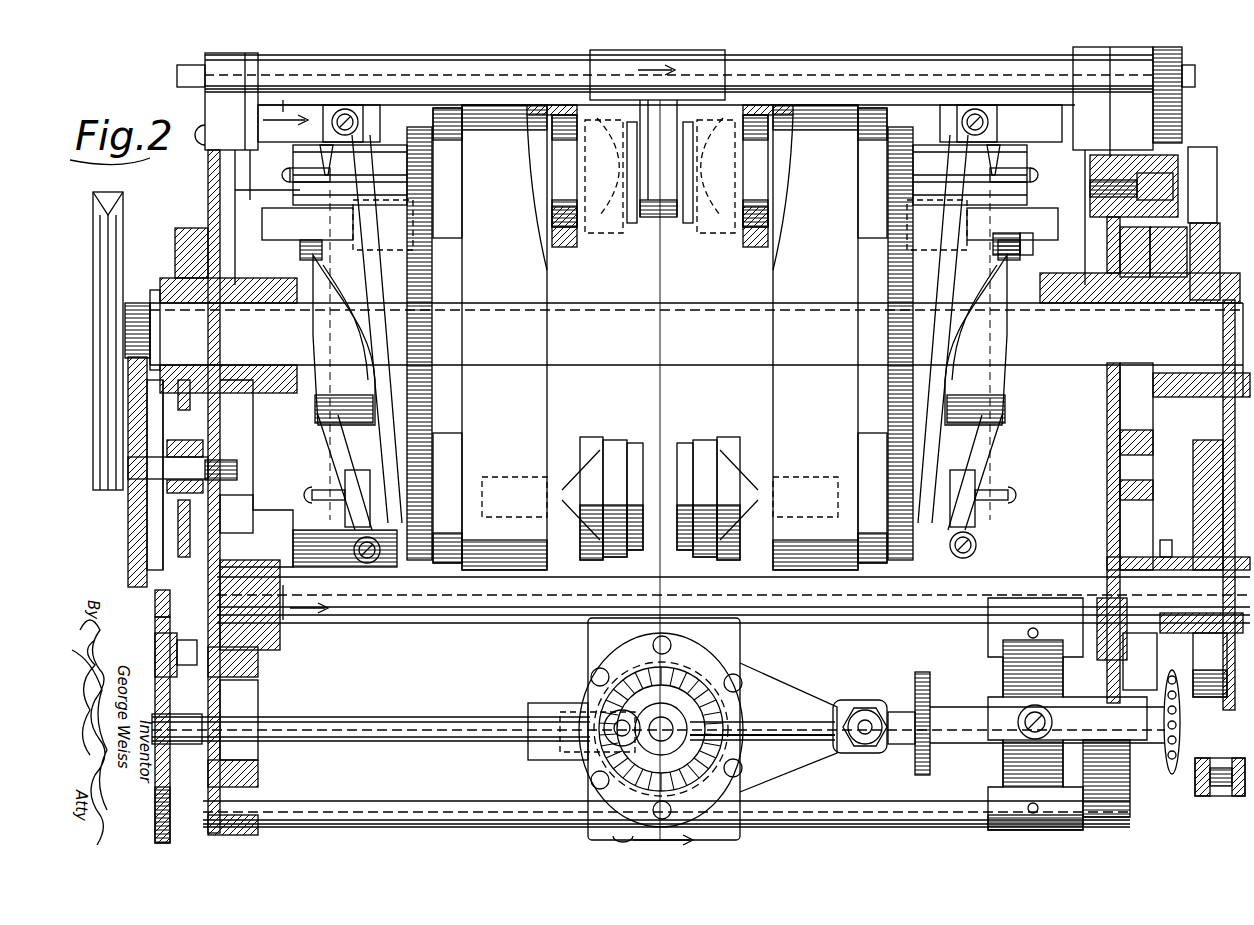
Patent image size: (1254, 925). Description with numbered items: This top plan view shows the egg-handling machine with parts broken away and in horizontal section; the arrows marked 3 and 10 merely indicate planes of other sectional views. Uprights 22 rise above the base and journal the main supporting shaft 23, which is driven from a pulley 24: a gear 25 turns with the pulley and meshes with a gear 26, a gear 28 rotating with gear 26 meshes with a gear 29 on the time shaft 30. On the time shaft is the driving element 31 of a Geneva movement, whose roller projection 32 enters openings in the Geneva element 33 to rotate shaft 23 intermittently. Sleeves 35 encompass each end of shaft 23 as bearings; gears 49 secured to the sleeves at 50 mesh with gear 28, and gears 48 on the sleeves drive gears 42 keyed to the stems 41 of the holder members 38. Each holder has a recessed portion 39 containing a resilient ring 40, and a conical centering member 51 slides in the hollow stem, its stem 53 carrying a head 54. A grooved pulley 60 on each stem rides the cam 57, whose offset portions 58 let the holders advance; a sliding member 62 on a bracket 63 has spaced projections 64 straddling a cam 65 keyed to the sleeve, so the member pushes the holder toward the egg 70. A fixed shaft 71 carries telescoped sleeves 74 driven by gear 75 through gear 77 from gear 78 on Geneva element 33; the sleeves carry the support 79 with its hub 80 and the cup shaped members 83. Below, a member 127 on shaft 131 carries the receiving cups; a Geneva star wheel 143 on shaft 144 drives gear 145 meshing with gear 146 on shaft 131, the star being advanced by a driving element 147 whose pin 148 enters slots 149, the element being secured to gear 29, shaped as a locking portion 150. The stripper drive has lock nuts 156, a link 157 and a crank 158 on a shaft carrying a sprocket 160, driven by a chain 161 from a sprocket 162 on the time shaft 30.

The section line 3 is at (653, 453).
The section line 10 is at (295, 360).
The uprights 22 is at (208, 184).
The shaft 23 is at (700, 306).
The pulley 24 is at (105, 200).
The gear 25 is at (135, 300).
The gear 26 is at (128, 514).
The gear 28 is at (178, 440).
The gear 29 is at (215, 500).
The shaft 30 is at (733, 605).
The driving element of Geneva movement 31 is at (1208, 505).
The lateral projection 32 is at (1210, 796).
The Geneva element 33 is at (1218, 260).
The sleeves 35 is at (200, 300).
The member 38 is at (612, 440).
The recessed portion 39 is at (576, 240).
The ring 40 is at (632, 224).
The stem or projection 41 is at (390, 148).
The gear 42 is at (415, 127).
The gear 48 is at (432, 250).
The gears 49 is at (190, 228).
The securing point 50 is at (158, 290).
The conically shaped member 51 is at (560, 142).
The stem 53 is at (503, 172).
The head 54 is at (285, 170).
The cam 57 is at (945, 120).
The offset portion 58 is at (362, 563).
The pulley 60 is at (1000, 514).
The member 62 is at (280, 205).
The bracket or guide 63 is at (225, 170).
The spaced projections 64 is at (1015, 256).
The cam 65 is at (1028, 403).
The eggs 70 is at (672, 122).
The shaft 71 is at (177, 74).
The sleeves 74 is at (500, 103).
The gear wheel 75 is at (1182, 95).
The gear 77 is at (1195, 147).
The gear 78 is at (1184, 252).
The support 79 is at (645, 108).
The hub 80 is at (725, 72).
The cup shaped members 83 is at (655, 217).
The member 127 is at (190, 472).
The shaft 131 is at (668, 733).
The star or driven wheel 143 is at (172, 770).
The shaft 144 is at (448, 735).
The gear 145 is at (580, 755).
The gear 146 is at (720, 703).
The driving element 147 is at (165, 525).
The pin 148 is at (160, 645).
The slots 149 is at (170, 815).
The locking portion 150 is at (158, 606).
The lock nuts 156 is at (866, 720).
The link 157 is at (900, 712).
The crank 158 is at (930, 690).
The sprocket wheel 160 is at (1180, 740).
The endless flexible belt or drive member 161 is at (1175, 660).
The sprocket wheel 162 is at (1172, 545).